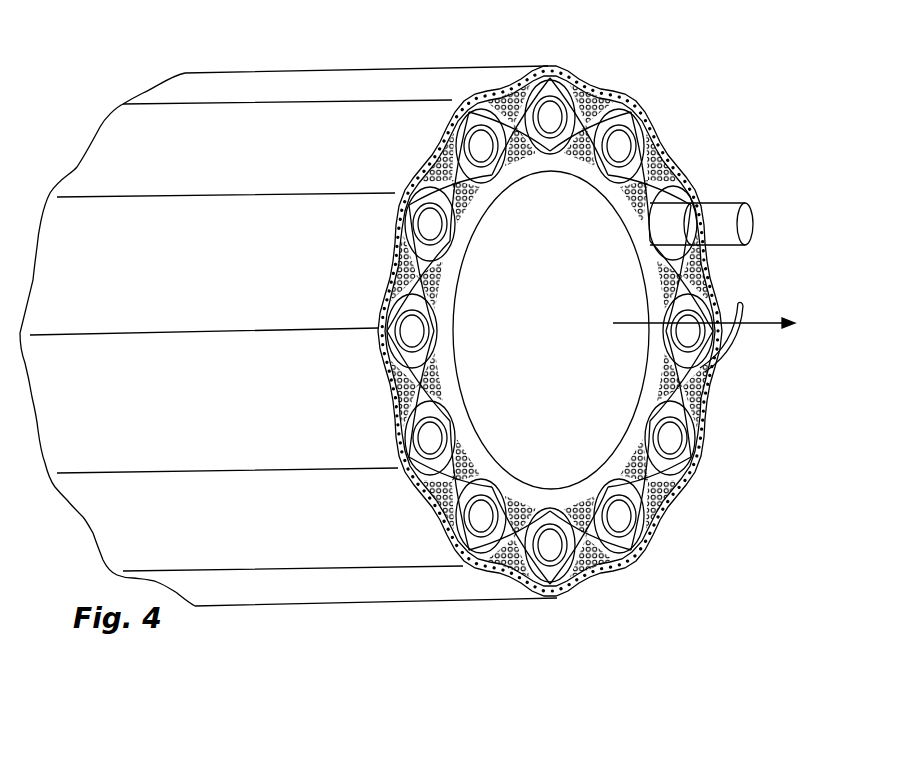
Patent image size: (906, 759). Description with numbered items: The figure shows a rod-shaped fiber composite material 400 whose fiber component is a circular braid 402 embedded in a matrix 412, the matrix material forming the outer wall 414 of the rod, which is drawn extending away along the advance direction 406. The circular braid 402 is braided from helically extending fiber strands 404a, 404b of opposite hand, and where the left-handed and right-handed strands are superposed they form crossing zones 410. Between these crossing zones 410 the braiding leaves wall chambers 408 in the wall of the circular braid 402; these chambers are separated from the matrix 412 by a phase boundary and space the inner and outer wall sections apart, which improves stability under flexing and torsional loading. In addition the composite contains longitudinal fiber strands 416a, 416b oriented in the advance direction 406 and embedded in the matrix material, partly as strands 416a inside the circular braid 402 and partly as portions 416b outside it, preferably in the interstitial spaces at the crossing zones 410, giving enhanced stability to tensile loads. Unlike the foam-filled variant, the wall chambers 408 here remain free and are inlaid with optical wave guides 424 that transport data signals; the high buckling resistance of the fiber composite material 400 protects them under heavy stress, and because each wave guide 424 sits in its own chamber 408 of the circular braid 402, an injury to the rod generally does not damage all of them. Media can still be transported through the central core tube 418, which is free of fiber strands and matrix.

The fiber composite material 400 is at (437, 64).
The circular braid 402 is at (560, 72).
The fiber strand 404a is at (613, 130).
The fiber strand 404b is at (643, 133).
The advance direction 406 is at (782, 322).
The wall chamber 408 is at (690, 190).
The crossing zone 410 is at (700, 262).
The matrix 412 is at (663, 148).
The outer wall 414 is at (283, 147).
The longitudinal fiber strand 416a is at (445, 363).
The longitudinal fiber strand 416b is at (413, 413).
The core tube 418 is at (622, 368).
The optical wave guide 424 is at (707, 230).